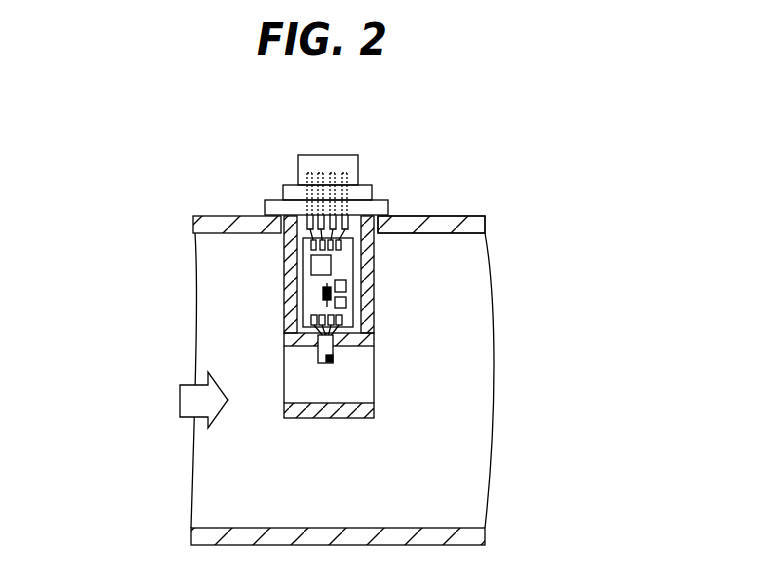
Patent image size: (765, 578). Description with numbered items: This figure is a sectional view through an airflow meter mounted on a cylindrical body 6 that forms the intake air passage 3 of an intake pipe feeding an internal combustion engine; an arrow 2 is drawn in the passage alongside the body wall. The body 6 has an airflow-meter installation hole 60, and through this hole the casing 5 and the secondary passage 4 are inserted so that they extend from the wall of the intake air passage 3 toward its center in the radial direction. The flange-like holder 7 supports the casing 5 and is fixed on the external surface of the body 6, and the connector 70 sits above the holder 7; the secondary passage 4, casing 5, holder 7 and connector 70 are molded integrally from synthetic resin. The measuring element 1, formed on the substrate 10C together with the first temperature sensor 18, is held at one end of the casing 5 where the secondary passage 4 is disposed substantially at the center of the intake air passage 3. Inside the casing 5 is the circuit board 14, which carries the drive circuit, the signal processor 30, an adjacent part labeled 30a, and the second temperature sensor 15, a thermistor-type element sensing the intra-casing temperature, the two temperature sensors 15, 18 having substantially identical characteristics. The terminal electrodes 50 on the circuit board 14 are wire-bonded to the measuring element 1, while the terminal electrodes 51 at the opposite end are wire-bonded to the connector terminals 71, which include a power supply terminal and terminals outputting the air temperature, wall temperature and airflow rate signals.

The measuring element 1 is at (333, 340).
The air flow direction 2 is at (180, 402).
The intake air passage 3 is at (206, 464).
The secondary passage 4 is at (340, 400).
The casing 5 is at (373, 281).
The body 6 is at (478, 224).
The holder 7 is at (378, 204).
The substrate 10C is at (318, 348).
The circuit board 14 is at (309, 262).
The second temperature sensor 15 is at (323, 290).
The first temperature sensor 18 is at (333, 359).
The signal processor 30 is at (331, 262).
The chip components 30a is at (348, 282).
The terminal electrodes 50 is at (348, 318).
The terminal electrodes 51 is at (303, 239).
The airflow-meter installation hole 60 is at (388, 214).
The connector 70 is at (305, 156).
The connector terminals 71 is at (346, 174).